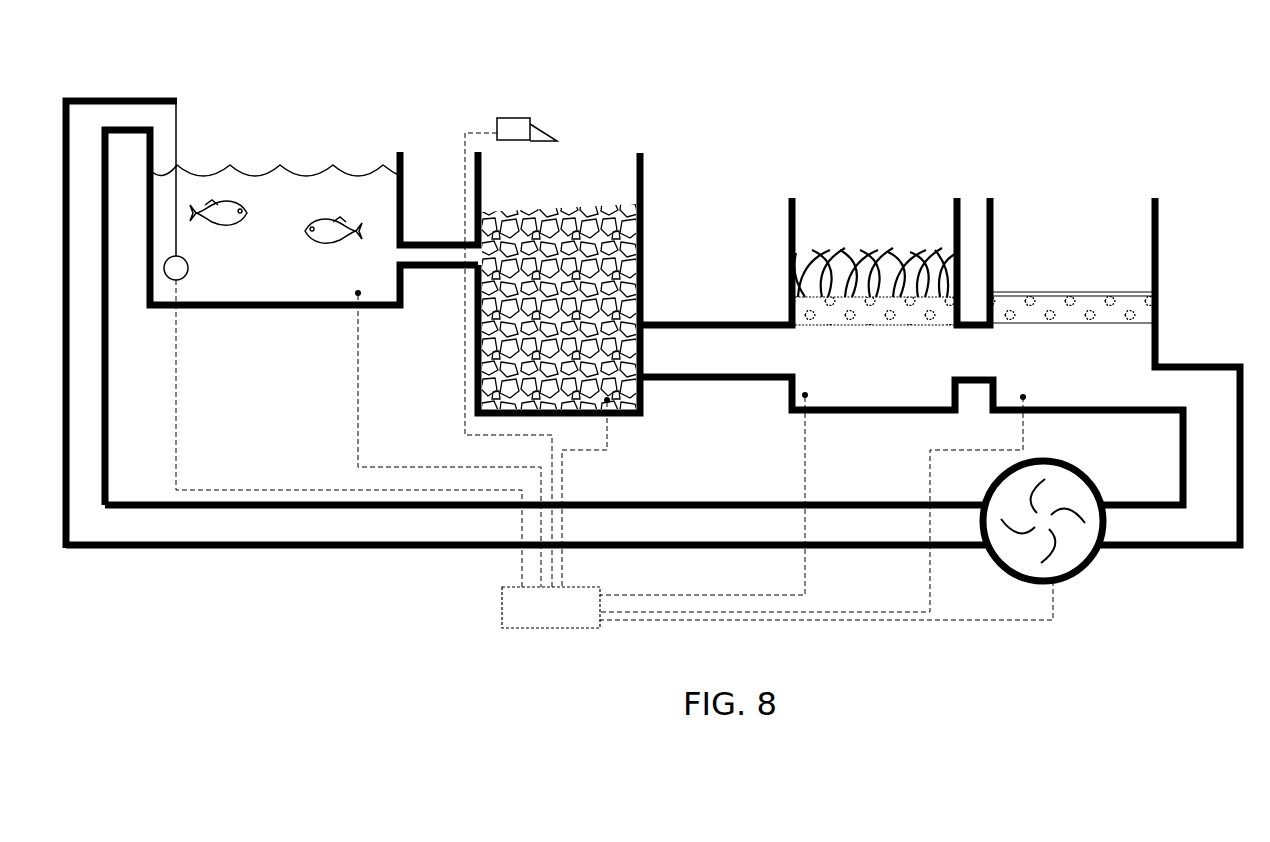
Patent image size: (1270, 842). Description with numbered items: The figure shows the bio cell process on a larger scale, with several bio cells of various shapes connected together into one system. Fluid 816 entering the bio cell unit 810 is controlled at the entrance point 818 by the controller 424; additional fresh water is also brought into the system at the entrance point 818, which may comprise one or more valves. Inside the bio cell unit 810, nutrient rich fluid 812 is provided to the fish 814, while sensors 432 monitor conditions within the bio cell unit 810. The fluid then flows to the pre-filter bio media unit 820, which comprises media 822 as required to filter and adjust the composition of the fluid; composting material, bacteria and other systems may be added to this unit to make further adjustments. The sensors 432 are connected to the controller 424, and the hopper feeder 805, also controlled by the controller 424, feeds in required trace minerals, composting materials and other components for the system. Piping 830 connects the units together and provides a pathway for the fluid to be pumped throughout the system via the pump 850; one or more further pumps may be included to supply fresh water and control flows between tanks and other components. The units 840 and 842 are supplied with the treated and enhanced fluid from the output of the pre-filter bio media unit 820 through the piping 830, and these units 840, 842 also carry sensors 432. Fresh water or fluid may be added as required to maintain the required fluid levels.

The fluid 816 is at (125, 112).
The bio cell unit 810 is at (400, 152).
The nutrient rich fluid 812 is at (258, 283).
The fish 814 is at (230, 200).
The entrance point 818 is at (168, 275).
The hopper feeder 805 is at (512, 127).
The pre-filter bio media unit 820 is at (640, 150).
The media 822 is at (597, 247).
The unit 840 is at (795, 198).
The unit 842 is at (997, 215).
The piping 830 is at (195, 518).
The pump 850 is at (1043, 563).
The controller 424 is at (580, 615).
The sensors 432 is at (358, 295).